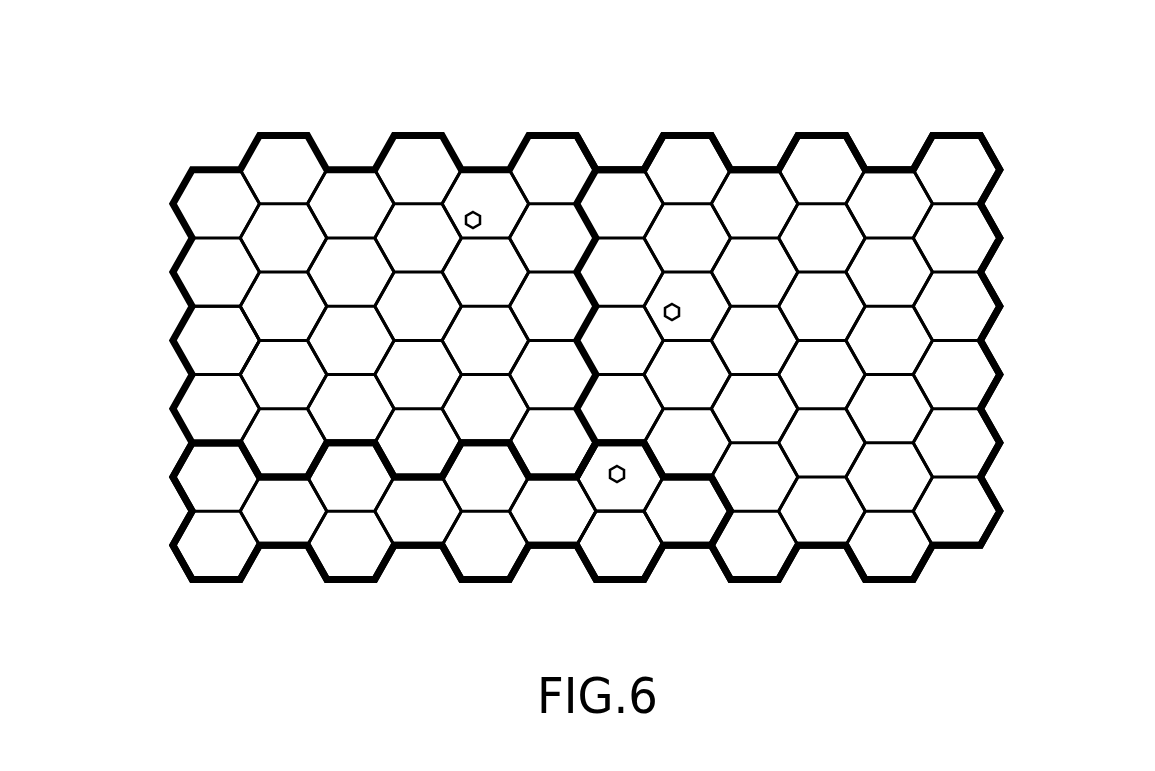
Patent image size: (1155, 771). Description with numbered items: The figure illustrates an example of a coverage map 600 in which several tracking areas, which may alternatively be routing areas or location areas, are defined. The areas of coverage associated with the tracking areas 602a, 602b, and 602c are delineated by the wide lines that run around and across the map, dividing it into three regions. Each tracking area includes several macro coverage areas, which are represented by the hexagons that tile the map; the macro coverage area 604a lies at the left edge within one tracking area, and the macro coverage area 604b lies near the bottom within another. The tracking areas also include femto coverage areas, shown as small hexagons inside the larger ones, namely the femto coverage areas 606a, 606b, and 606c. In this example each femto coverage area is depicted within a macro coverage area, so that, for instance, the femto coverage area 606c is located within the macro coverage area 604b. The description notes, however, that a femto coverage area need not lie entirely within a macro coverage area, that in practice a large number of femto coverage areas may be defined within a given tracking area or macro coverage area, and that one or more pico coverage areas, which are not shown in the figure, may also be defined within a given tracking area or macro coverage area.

The coverage map 600 is at (1030, 120).
The tracking area 602a is at (172, 203).
The tracking area 602b is at (242, 582).
The tracking area 602c is at (992, 359).
The macro coverage area 604a is at (217, 305).
The macro coverage area 604b is at (608, 508).
The femto coverage area 606a is at (478, 212).
The femto coverage area 606b is at (675, 304).
The femto coverage area 606c is at (619, 482).